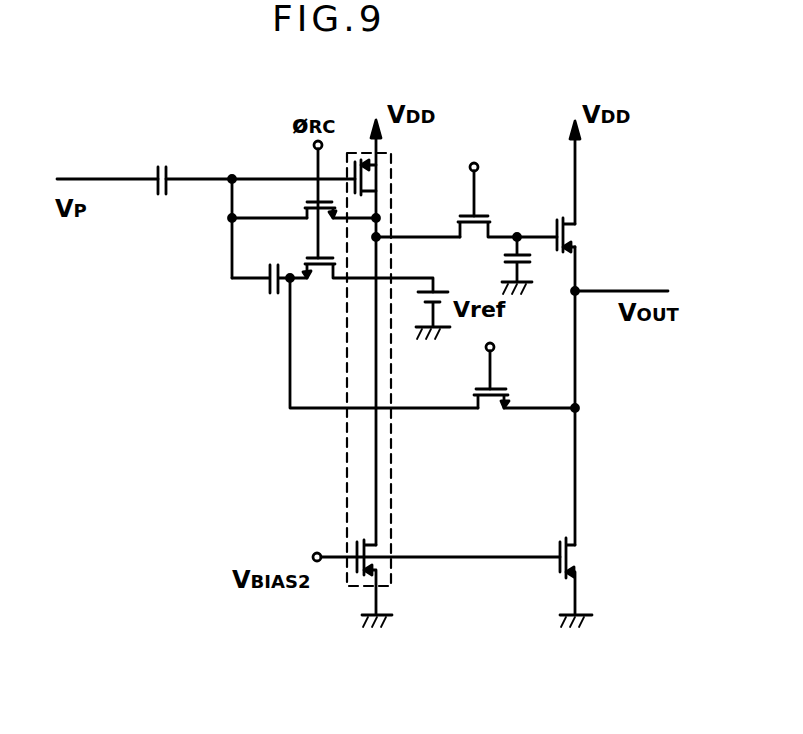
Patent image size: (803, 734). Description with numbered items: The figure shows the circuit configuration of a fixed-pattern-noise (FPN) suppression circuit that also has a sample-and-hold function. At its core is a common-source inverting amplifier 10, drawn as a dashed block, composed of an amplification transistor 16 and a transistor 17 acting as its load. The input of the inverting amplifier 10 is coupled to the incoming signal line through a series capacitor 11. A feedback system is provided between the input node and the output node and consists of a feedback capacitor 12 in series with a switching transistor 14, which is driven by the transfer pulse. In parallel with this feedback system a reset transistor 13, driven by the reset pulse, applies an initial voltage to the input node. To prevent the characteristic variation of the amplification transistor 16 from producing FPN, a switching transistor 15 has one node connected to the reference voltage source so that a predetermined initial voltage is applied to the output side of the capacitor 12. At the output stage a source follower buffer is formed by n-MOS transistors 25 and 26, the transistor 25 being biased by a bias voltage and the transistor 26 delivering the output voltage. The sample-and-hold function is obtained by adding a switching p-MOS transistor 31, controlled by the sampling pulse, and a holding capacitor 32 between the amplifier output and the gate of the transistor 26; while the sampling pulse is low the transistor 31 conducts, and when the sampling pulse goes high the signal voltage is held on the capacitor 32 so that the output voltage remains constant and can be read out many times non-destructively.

The inverting amplifier 10 is at (348, 590).
The capacitor 11 is at (162, 165).
The capacitor 12 is at (271, 262).
The reset n-MOS transistor 13 is at (306, 203).
The switching transistor 14 is at (490, 412).
The switching n-MOS transistor 15 is at (326, 284).
The amplification transistor 16 is at (383, 187).
The load transistor 17 is at (383, 552).
The n-MOS transistor 25 is at (588, 560).
The n-MOS transistor 26 is at (582, 236).
The switching p-MOS transistor 31 is at (492, 211).
The holding capacitor 32 is at (504, 268).